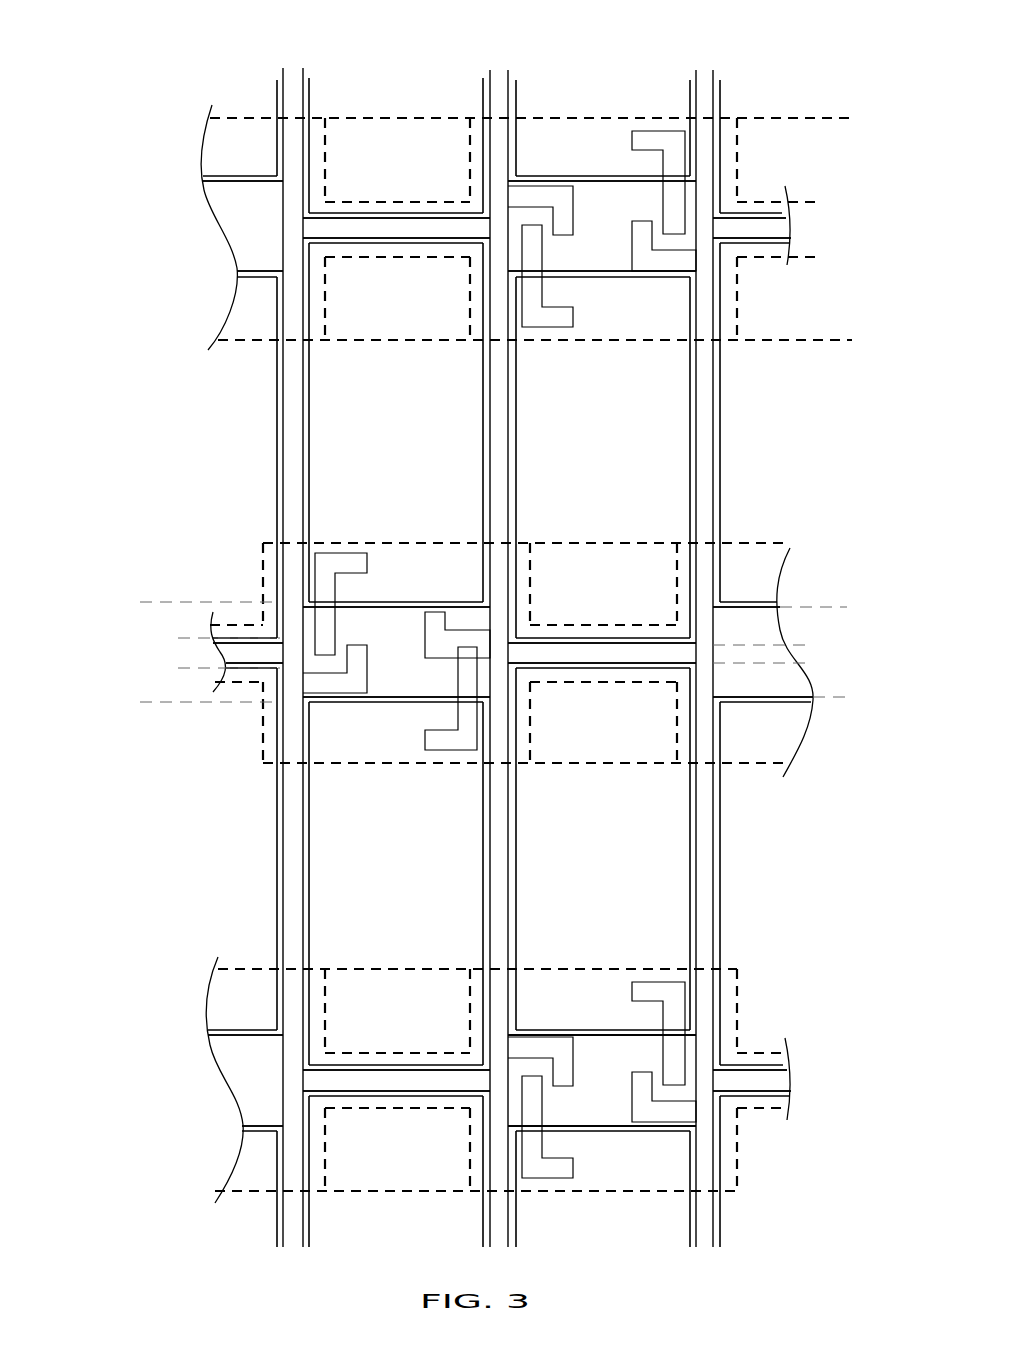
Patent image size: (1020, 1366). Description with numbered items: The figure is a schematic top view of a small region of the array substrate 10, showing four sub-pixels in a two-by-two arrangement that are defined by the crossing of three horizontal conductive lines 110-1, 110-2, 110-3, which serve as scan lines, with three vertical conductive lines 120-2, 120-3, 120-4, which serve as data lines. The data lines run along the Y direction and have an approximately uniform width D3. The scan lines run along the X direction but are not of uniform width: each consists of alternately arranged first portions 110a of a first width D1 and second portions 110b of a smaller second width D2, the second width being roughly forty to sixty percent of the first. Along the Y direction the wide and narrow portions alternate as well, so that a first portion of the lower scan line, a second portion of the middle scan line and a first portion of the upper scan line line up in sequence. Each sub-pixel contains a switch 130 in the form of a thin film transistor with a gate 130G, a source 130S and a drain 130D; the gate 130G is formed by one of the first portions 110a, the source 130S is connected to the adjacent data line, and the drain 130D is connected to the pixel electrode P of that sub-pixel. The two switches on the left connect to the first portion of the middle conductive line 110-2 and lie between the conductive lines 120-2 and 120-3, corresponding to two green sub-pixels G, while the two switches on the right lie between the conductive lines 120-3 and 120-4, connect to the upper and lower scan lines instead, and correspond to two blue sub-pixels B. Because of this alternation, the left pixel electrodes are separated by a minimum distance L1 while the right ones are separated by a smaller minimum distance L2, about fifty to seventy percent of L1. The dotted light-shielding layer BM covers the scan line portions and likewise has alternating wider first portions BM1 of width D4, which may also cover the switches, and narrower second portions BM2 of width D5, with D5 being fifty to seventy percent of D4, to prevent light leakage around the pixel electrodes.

The array substrate 10 is at (146, 88).
The conductive line 120-2 is at (303, 94).
The conductive line 120-3 is at (509, 94).
The conductive line 120-4 is at (717, 96).
The width D3 is at (297, 57).
The pixel electrode P is at (297, 410).
The conductive line 110-3 is at (137, 198).
The conductive line 110-2 is at (137, 720).
The conductive line 110-1 is at (137, 1045).
The first portion 110a is at (255, 212).
The second portion 110b is at (310, 230).
The switch 130 is at (589, 654).
The source 130S is at (680, 1112).
The drain 130D is at (675, 1002).
The gate 130G is at (672, 1093).
The light-shielding layer BM is at (531, 617).
The first portion BM1 is at (613, 119).
The second portion BM2 is at (757, 202).
The first width D1 is at (862, 607).
The second width D2 is at (820, 645).
The first width D4 is at (861, 118).
The second width D5 is at (820, 202).
The minimum distance L1 is at (143, 602).
The minimum distance L2 is at (178, 638).
The green sub-pixel G is at (406, 448).
The blue sub-pixel B is at (602, 448).